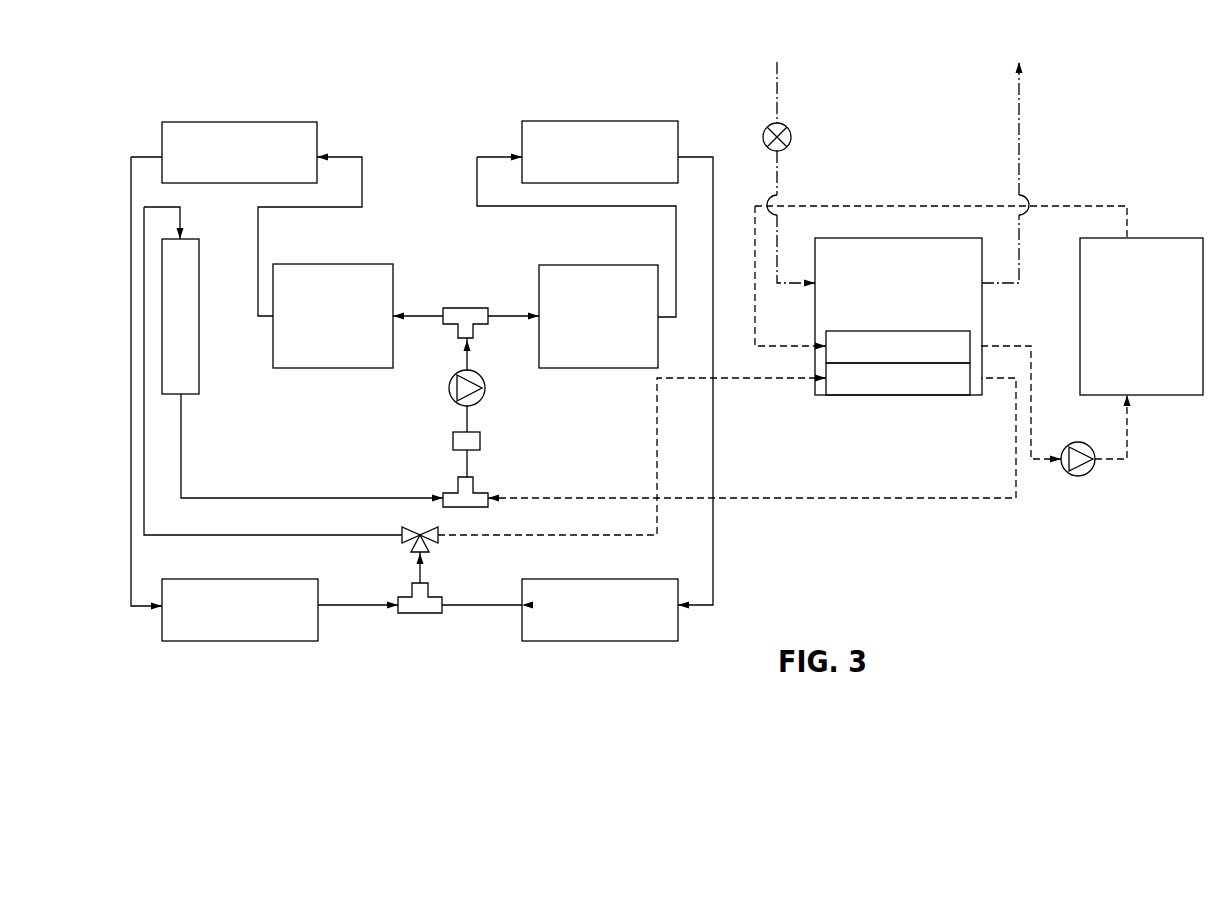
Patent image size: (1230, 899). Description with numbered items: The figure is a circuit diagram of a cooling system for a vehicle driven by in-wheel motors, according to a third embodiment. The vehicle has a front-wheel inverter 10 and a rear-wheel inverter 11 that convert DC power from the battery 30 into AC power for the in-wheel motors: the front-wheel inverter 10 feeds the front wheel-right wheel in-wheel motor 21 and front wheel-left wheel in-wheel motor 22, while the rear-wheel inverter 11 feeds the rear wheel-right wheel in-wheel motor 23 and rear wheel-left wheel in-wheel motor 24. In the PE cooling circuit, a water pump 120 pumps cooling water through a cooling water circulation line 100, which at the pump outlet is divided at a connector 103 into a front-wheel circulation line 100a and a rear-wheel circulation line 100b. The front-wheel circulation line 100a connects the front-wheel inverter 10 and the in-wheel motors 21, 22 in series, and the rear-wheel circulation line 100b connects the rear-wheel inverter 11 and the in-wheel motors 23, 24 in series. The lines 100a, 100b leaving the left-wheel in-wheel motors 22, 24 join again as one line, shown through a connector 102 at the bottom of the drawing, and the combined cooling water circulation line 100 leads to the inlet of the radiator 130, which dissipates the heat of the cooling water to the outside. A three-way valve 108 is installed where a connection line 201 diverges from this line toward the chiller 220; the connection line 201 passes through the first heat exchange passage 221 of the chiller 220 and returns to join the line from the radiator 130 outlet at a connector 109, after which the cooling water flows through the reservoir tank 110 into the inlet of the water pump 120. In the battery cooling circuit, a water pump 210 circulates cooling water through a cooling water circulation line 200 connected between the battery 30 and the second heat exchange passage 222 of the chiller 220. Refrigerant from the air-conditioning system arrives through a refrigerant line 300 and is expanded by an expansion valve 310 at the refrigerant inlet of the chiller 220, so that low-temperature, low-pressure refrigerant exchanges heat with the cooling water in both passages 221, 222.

The front-wheel inverter 10 is at (360, 264).
The rear-wheel inverter 11 is at (602, 368).
The front wheel-right wheel in-wheel motor 21 is at (230, 122).
The front wheel-left wheel in-wheel motor 22 is at (248, 641).
The rear wheel-right wheel in-wheel motor 23 is at (635, 121).
The rear wheel-left wheel in-wheel motor 24 is at (597, 641).
The battery 30 is at (1172, 238).
The cooling water circulation line 100 is at (455, 373).
The front-wheel circulation line 100a is at (131, 190).
The rear-wheel circulation line 100b is at (477, 157).
The first connection fitting 102 is at (418, 613).
The connector 103 is at (468, 308).
The 3-way valve 108 is at (402, 540).
The connector 109 is at (458, 486).
The reservoir tank 110 is at (453, 440).
The water pump 120 is at (485, 390).
The radiator 130 is at (199, 375).
The cooling water circulation line 200 is at (1096, 206).
The connection line 201 is at (740, 378).
The water pump 210 is at (1090, 474).
The chiller 220 is at (956, 238).
The first heat exchange passage 221 is at (955, 382).
The second heat exchange passage 222 is at (842, 348).
The refrigerant line 300 is at (1018, 118).
The expansion valve 310 is at (791, 137).